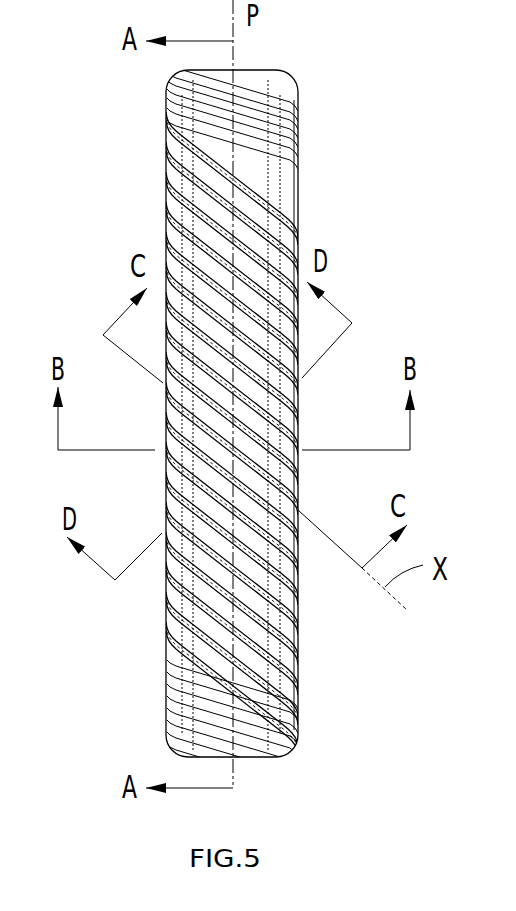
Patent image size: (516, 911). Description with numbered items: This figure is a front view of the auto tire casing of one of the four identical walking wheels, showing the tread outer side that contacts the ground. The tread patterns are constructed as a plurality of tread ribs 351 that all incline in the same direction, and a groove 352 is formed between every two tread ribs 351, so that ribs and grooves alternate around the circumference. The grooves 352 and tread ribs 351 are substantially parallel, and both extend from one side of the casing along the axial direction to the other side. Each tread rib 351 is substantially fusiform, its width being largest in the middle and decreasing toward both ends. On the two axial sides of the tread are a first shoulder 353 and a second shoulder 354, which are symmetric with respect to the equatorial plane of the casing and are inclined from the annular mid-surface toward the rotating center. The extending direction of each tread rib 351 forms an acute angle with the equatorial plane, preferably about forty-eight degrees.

The tread rib 351 is at (185, 612).
The groove 352 is at (280, 633).
The first shoulder 353 is at (172, 191).
The second shoulder 354 is at (292, 212).